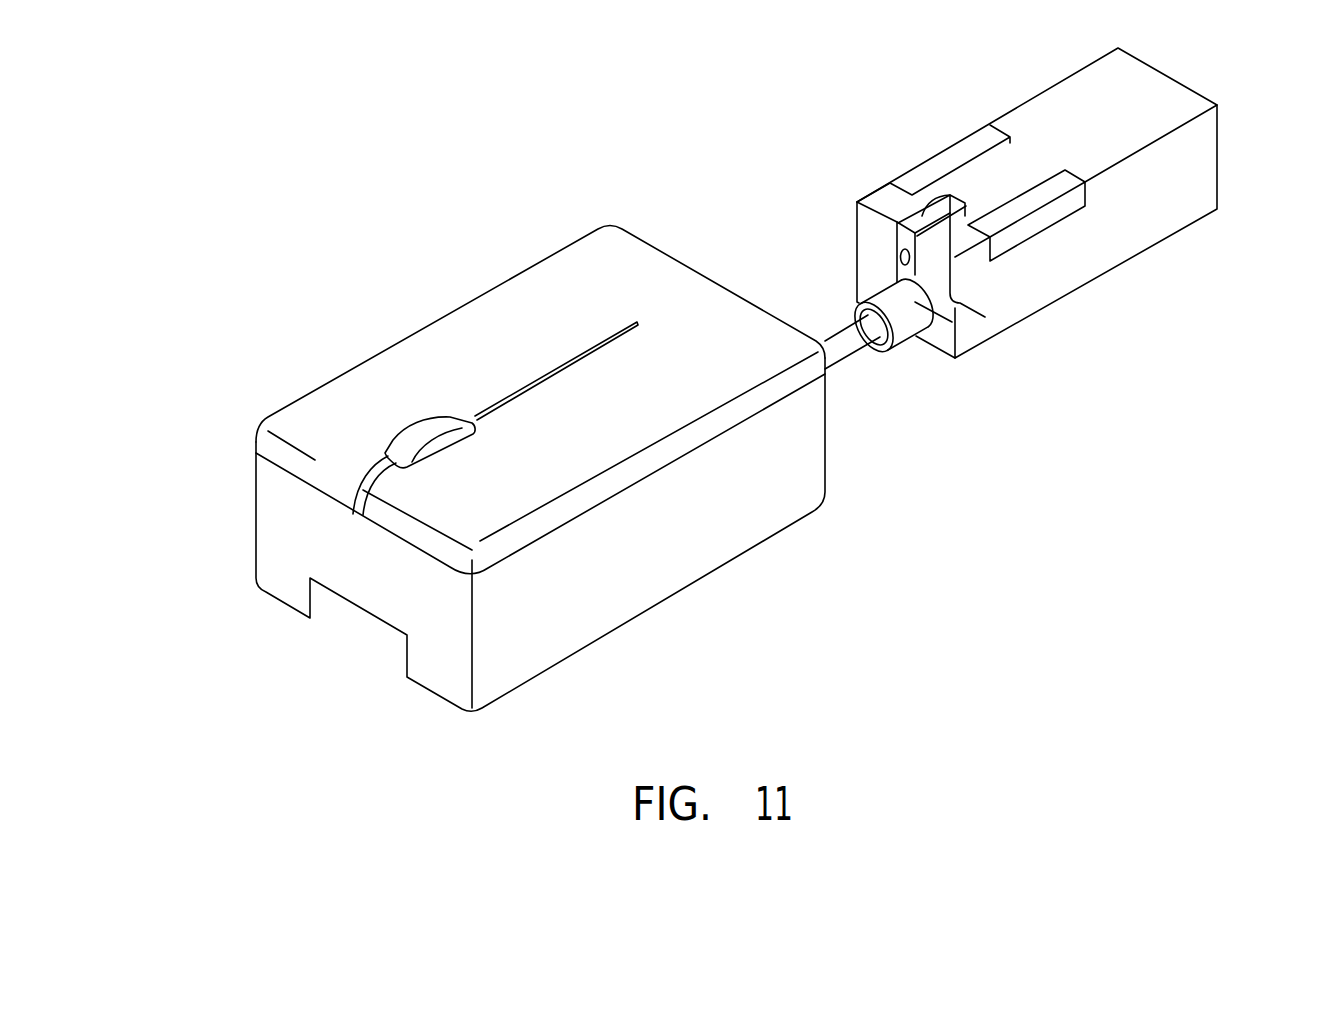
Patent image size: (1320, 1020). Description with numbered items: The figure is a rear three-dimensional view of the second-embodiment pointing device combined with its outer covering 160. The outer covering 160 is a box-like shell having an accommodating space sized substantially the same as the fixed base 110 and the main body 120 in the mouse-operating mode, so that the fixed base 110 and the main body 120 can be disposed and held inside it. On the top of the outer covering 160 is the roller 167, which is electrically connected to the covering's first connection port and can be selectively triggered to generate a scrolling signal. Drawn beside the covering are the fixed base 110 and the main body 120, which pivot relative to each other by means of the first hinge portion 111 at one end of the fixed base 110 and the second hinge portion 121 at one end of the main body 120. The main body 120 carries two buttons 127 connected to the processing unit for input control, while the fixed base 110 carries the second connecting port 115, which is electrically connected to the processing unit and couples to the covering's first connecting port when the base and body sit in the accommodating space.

The fixed base 110 is at (1037, 293).
The first hinge portion 111 is at (905, 275).
The second connecting port 115 is at (893, 260).
The main body 120 is at (1155, 187).
The second hinge portion 121 is at (893, 200).
The buttons 127 is at (1013, 207).
The outer covering 160 is at (545, 278).
The roller 167 is at (423, 430).